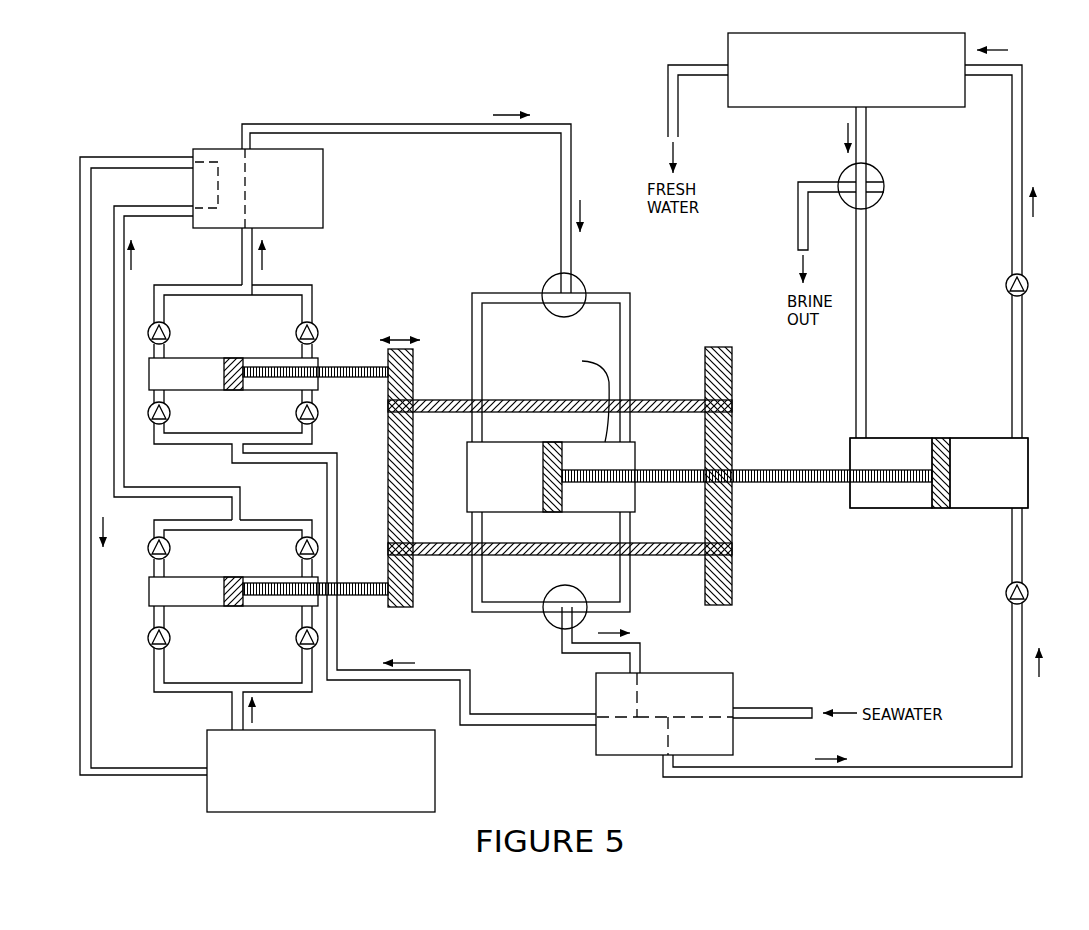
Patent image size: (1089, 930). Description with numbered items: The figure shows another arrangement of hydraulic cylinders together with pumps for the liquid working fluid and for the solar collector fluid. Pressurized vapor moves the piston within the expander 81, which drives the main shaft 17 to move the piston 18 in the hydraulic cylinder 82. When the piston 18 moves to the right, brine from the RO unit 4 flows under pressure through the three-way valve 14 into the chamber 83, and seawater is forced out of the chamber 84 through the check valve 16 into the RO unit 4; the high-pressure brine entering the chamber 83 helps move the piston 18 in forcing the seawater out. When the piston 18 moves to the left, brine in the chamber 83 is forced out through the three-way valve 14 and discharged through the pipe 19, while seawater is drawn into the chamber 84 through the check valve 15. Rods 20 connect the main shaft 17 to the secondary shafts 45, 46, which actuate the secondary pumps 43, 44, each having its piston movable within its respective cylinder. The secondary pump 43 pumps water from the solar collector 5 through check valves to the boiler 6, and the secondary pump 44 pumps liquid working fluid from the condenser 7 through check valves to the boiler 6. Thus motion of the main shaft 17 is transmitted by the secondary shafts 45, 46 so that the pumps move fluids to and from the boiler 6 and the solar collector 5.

The RO unit 4 is at (836, 91).
The solar collector 5 is at (309, 795).
The boiler 6 is at (323, 176).
The condenser 7 is at (687, 673).
The three-way valve 14 is at (880, 172).
The check valve 15 is at (1026, 587).
The check valve 16 is at (1024, 277).
The main shaft 17 is at (605, 470).
The piston 18 is at (938, 440).
The pipe 19 is at (797, 221).
The rods 20 is at (500, 400).
The secondary pump 43 is at (195, 577).
The secondary pump 44 is at (205, 358).
The secondary shaft 45 is at (328, 367).
The secondary shaft 46 is at (342, 583).
The expander 81 is at (515, 442).
The hydraulic cylinder 82 is at (904, 510).
The chamber 83 is at (883, 448).
The chamber 84 is at (1012, 473).